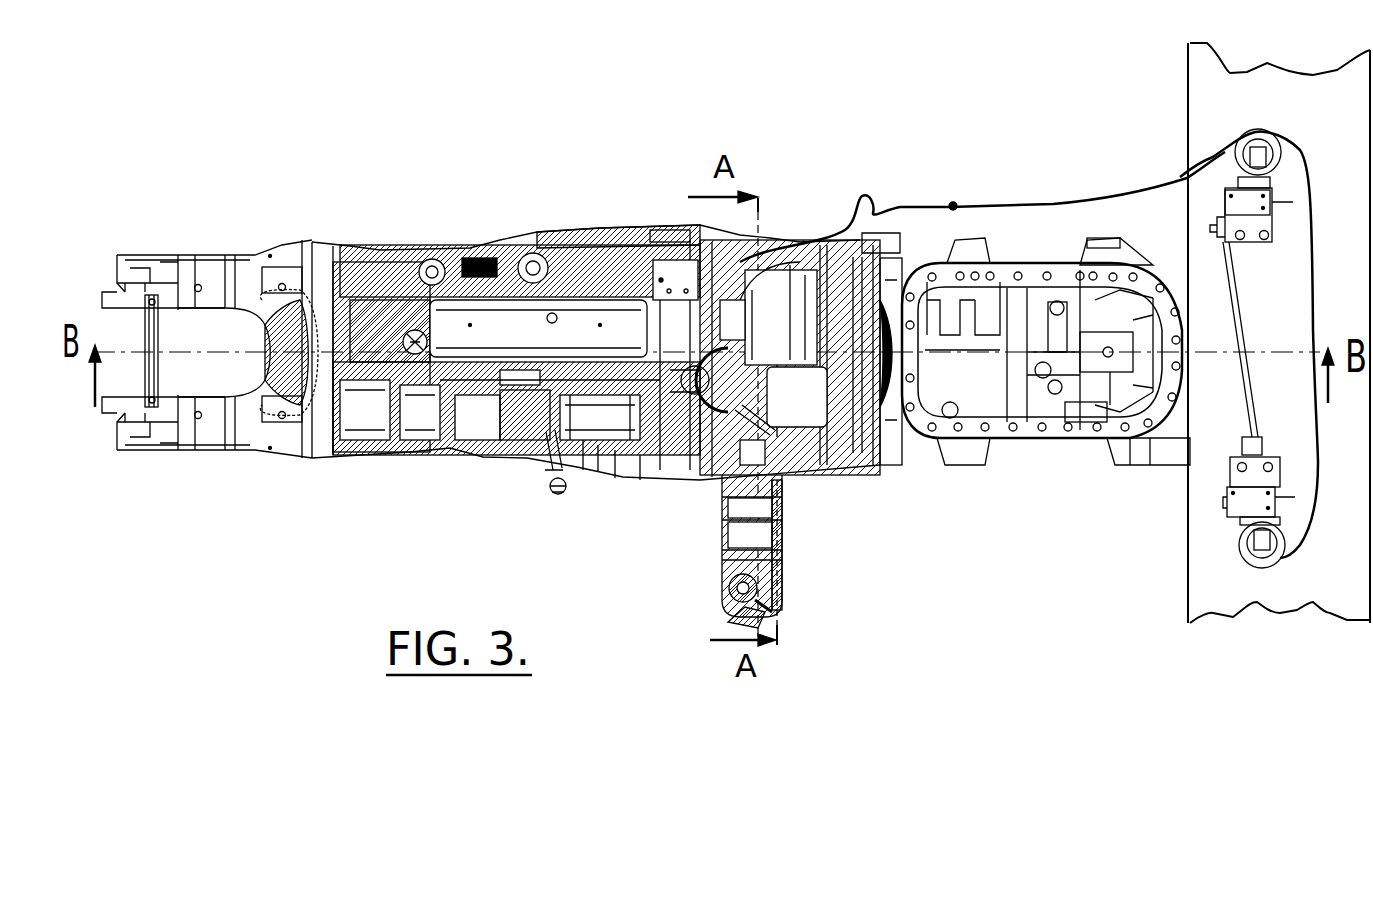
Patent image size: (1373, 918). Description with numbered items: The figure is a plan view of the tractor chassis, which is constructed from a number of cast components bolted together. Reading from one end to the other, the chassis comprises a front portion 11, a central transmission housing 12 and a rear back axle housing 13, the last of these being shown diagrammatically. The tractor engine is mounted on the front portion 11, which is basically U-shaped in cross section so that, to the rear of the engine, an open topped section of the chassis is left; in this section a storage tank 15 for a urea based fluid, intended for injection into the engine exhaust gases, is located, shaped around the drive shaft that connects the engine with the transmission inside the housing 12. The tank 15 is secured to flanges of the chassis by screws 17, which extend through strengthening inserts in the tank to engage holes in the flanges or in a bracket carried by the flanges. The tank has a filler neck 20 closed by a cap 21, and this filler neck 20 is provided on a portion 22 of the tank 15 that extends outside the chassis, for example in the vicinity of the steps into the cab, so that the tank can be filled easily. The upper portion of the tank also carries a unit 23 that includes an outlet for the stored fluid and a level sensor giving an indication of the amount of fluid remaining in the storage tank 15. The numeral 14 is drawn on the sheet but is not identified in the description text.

The front portion 11 is at (590, 233).
The central transmission housing 12 is at (1033, 435).
The rear back axle housing 13 is at (1207, 113).
The engine 14 is at (468, 330).
The storage tank 15 is at (822, 233).
The screws 17 is at (770, 238).
The filler neck 20 is at (767, 588).
The cap 21 is at (783, 620).
The portion of the tank 22 is at (773, 518).
The unit 23 is at (740, 400).